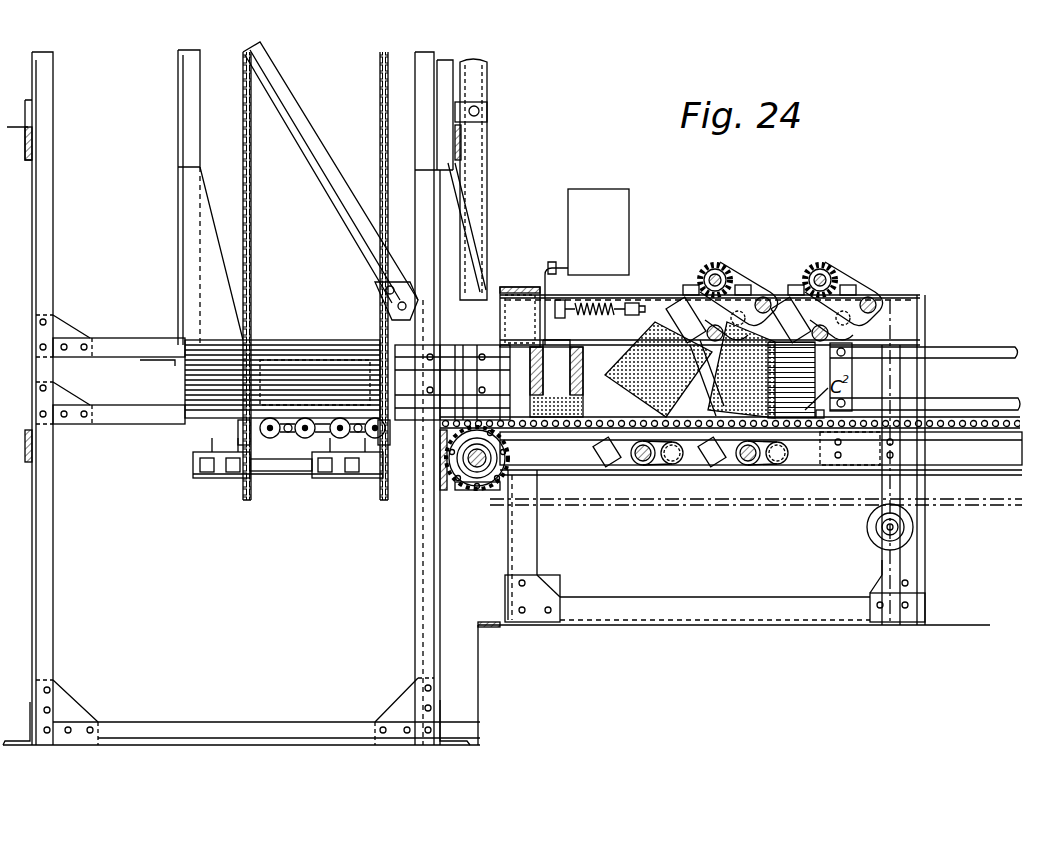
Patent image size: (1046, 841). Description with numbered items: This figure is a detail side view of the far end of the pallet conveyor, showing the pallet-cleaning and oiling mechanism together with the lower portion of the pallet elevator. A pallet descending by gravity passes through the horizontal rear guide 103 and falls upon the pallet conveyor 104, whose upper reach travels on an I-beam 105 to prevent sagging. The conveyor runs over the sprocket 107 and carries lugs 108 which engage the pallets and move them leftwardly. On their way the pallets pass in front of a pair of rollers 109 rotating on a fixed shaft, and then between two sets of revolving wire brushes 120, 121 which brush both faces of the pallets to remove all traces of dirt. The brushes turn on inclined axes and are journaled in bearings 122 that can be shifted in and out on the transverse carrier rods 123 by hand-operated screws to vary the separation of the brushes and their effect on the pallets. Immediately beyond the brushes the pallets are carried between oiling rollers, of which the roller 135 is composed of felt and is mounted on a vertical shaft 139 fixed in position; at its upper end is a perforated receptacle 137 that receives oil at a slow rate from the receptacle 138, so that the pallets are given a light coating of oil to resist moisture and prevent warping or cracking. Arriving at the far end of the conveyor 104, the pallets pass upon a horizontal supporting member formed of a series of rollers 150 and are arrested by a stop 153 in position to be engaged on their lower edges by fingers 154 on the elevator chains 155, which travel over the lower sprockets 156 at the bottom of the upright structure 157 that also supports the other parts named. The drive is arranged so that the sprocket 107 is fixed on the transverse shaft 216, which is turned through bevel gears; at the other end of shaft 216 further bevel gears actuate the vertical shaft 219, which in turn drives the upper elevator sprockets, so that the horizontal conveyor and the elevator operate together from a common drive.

The horizontal rear guide 103 is at (965, 352).
The pallet conveyor 104 is at (945, 412).
The I-beam 105 is at (761, 453).
The sprocket 107 is at (470, 492).
The lugs 108 is at (820, 425).
The rollers 109 is at (455, 410).
The revolving wire brushes 120 is at (640, 358).
The revolving wire brushes 121 is at (790, 362).
The bearings 122 is at (678, 312).
The transverse carrier rods 123 is at (758, 298).
The oiling roller 135 is at (586, 360).
The perforated receptacle 137 is at (540, 345).
The receptacle 138 is at (587, 267).
The vertical shaft 139 is at (553, 375).
The rollers 150 is at (272, 438).
The stop 153 is at (185, 385).
The fingers 154 is at (215, 422).
The elevator chains 155 is at (378, 296).
The lower sprockets 156 is at (245, 490).
The upright structure 157 is at (53, 289).
The transverse shaft 216 is at (478, 468).
The vertical shaft 219 is at (487, 221).